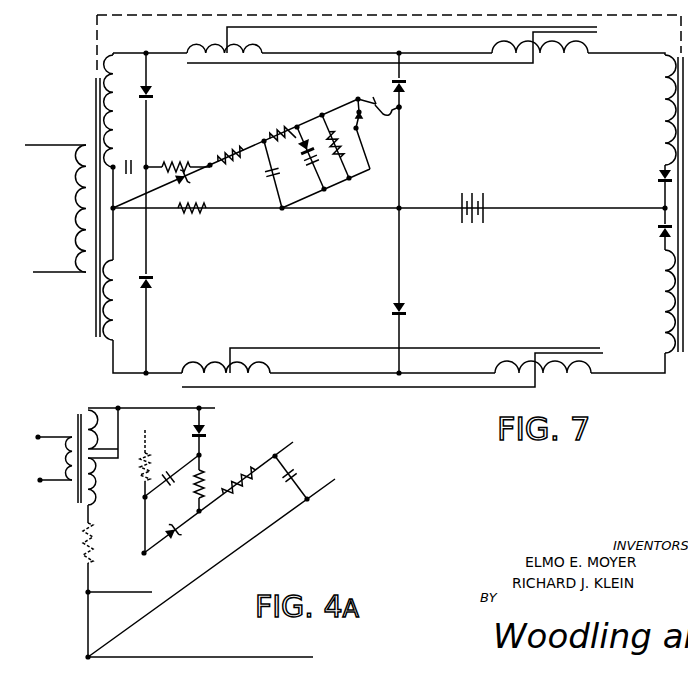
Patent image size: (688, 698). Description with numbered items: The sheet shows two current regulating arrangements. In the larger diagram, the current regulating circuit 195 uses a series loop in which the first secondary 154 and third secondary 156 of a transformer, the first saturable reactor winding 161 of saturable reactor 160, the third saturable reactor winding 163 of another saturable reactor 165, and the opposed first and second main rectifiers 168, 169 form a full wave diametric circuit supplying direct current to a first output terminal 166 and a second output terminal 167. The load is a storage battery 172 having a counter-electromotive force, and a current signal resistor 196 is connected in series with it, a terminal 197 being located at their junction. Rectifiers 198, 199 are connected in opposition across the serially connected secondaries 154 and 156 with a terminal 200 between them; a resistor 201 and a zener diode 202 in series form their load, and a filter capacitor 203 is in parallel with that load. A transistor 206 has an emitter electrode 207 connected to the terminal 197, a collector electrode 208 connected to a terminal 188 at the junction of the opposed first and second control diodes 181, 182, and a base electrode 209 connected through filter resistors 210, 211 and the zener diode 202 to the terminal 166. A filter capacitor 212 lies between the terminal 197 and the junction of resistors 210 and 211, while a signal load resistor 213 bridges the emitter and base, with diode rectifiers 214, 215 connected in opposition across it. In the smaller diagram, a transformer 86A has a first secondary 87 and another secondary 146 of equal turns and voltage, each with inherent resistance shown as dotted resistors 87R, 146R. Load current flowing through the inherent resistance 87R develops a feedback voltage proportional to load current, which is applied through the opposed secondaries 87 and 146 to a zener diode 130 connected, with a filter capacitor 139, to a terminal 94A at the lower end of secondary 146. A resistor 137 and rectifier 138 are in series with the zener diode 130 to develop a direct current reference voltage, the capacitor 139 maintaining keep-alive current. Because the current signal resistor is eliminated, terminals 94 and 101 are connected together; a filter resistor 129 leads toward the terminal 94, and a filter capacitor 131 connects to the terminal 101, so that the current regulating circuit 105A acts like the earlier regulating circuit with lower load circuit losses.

In FIG. 7, the first secondary 154 is at (109, 103).
In FIG. 7, the third secondary 156 is at (111, 337).
In FIG. 7, the saturable reactor 160 is at (244, 64).
In FIG. 7, the first saturable reactor winding 161 is at (200, 42).
In FIG. 7, the third saturable reactor winding 163 is at (270, 371).
In FIG. 7, the saturable reactor 165 is at (487, 386).
In FIG. 7, the first output terminal 166 is at (116, 211).
In FIG. 7, the second output terminal 167 is at (662, 210).
In FIG. 7, the first main rectifier 168 is at (659, 174).
In FIG. 7, the second main rectifier 169 is at (660, 236).
In FIG. 7, the storage battery 172 is at (488, 201).
In FIG. 7, the first control diode 181 is at (406, 87).
In FIG. 7, the second control diode 182 is at (405, 308).
In FIG. 7, the terminal 188 is at (404, 107).
In FIG. 7, the current regulating circuit 195 is at (558, 153).
In FIG. 7, the current signal resistor 196 is at (199, 215).
In FIG. 7, the terminal 197 is at (282, 209).
In FIG. 7, the rectifier 198 is at (151, 89).
In FIG. 7, the rectifier 199 is at (151, 281).
In FIG. 7, the terminal 200 is at (150, 163).
In FIG. 7, the resistor 201 is at (180, 163).
In FIG. 7, the zener diode 202 is at (188, 180).
In FIG. 7, the filter capacitor 203 is at (133, 161).
In FIG. 7, the transistor 206 is at (375, 103).
In FIG. 7, the emitter electrode 207 is at (359, 126).
In FIG. 7, the collector electrode 208 is at (387, 113).
In FIG. 7, the base electrode 209 is at (358, 97).
In FIG. 7, the filter resistor 210 is at (233, 156).
In FIG. 7, the filter resistor 211 is at (284, 128).
In FIG. 7, the filter capacitor 212 is at (268, 180).
In FIG. 7, the signal load resistor 213 is at (348, 172).
In FIG. 7, the diode rectifier 214 is at (305, 151).
In FIG. 7, the diode rectifier 215 is at (313, 167).
In FIG. 4A, the transformer 86A is at (77, 487).
In FIG. 4A, the first secondary 87 is at (95, 506).
In FIG. 4A, the inherent resistance 87R is at (82, 530).
In FIG. 4A, the terminal 94 is at (88, 592).
In FIG. 4A, the terminal 94A is at (144, 556).
In FIG. 4A, the terminal 101 is at (86, 657).
In FIG. 4A, the current regulating circuit 105A is at (252, 528).
In FIG. 4A, the filter resistor 129 is at (237, 482).
In FIG. 4A, the zener diode 130 is at (182, 534).
In FIG. 4A, the filter capacitor 131 is at (297, 478).
In FIG. 4A, the resistor 137 is at (204, 472).
In FIG. 4A, the rectifier 138 is at (206, 429).
In FIG. 4A, the filter capacitor 139 is at (179, 476).
In FIG. 4A, the secondary 146 is at (87, 410).
In FIG. 4A, the inherent resistance 146R is at (154, 482).